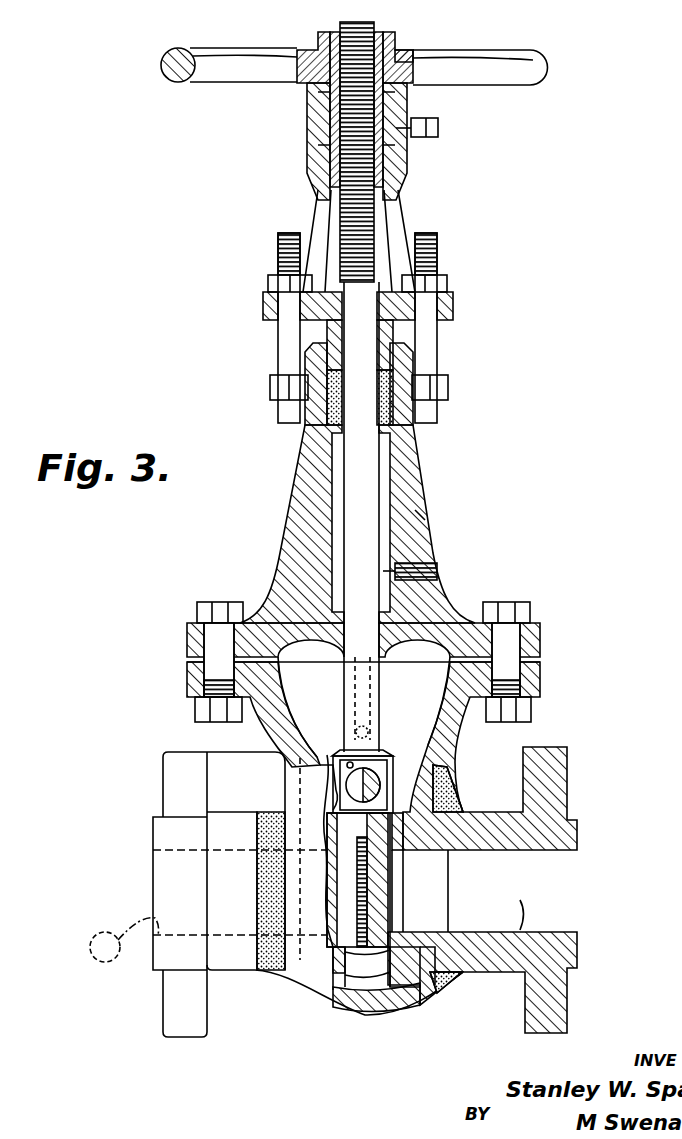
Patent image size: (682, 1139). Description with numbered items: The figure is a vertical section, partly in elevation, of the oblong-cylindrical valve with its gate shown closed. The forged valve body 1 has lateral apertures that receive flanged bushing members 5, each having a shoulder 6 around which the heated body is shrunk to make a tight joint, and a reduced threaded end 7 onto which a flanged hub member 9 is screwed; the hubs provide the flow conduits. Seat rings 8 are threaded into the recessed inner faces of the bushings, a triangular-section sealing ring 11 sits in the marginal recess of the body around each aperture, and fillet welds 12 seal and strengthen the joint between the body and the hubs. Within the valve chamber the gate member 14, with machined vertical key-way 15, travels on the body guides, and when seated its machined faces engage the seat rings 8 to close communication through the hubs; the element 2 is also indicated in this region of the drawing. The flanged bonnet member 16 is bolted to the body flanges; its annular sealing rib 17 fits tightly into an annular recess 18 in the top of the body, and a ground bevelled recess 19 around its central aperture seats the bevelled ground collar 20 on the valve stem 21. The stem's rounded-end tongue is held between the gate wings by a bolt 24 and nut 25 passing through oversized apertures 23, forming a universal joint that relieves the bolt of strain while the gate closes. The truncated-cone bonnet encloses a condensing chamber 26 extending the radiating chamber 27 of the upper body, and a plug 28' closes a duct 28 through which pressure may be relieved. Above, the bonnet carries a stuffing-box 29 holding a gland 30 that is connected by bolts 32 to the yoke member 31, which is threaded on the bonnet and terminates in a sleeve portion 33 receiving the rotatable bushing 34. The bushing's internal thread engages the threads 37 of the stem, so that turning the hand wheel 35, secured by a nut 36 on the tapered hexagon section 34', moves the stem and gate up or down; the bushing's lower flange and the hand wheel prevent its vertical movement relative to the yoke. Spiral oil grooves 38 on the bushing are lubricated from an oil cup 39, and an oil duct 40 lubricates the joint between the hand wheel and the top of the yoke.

The valve body 1 is at (272, 727).
The seat ring 2 is at (394, 840).
The flanged bushing member 5 is at (330, 1005).
The shoulder 6 is at (420, 950).
The reduced threaded end 7 is at (447, 850).
The seat ring 8 is at (327, 965).
The hub member 9 is at (157, 912).
The sealing ring 11 is at (430, 1005).
The fillet weld 12 is at (250, 997).
The gate member 14 is at (385, 1008).
The vertical key-way 15 is at (350, 1012).
The bonnet member 16 is at (427, 490).
The annular sealing rib 17 is at (473, 607).
The annular recess 18 is at (470, 720).
The ground bevelled recess 19 is at (380, 826).
The bevelled ground collar 20 is at (378, 756).
The valve stem 21 is at (362, 519).
The transversely extending aperture 23 is at (389, 758).
The bolt 24 is at (380, 783).
The nut 25 is at (340, 785).
The condensing chamber 26 is at (338, 483).
The radiating chamber 27 is at (364, 707).
The duct 28 is at (494, 505).
The plug 28' is at (455, 553).
The stuffing-box 29 is at (402, 375).
The gland 30 is at (452, 300).
The yoke member 31 is at (386, 204).
The bolt 32 is at (432, 233).
The sleeve portion 33 is at (308, 120).
The rotatable bushing 34 is at (301, 152).
The tapered hexagon section 34' is at (394, 102).
The hand wheel 35 is at (534, 70).
The nut 36 is at (325, 46).
The thread 37 is at (352, 204).
The spiral oil groove 38 is at (395, 107).
The oil cup 39 is at (440, 130).
The oil duct 40 is at (416, 62).